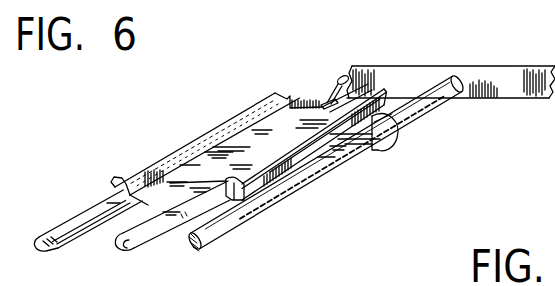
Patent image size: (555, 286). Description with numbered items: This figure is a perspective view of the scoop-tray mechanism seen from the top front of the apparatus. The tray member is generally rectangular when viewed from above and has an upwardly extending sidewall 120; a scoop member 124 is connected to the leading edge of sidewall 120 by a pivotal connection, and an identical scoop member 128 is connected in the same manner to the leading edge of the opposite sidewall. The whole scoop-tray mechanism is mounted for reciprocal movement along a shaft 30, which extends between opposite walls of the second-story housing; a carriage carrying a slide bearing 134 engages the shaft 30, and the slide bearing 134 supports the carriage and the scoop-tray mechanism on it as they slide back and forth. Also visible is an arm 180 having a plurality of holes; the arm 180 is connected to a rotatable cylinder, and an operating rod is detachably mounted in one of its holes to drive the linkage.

The sidewall 120 is at (243, 114).
The scoop member 124 is at (73, 217).
The scoop member 128 is at (143, 249).
The shaft 30 is at (232, 229).
The slide bearing 134 is at (377, 140).
The arm 180 is at (330, 76).